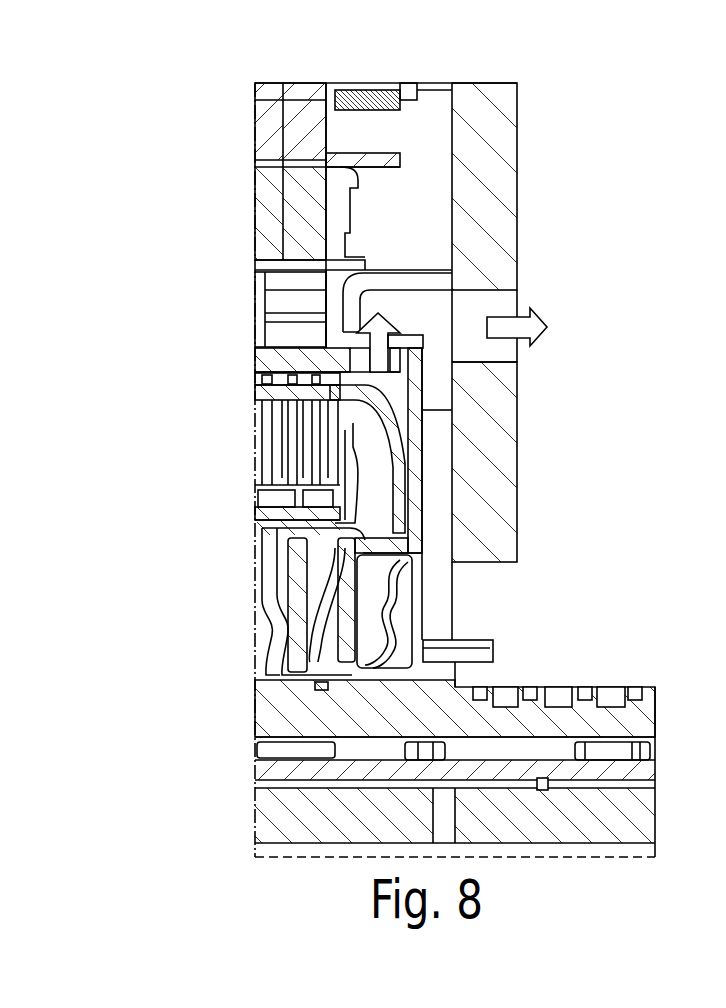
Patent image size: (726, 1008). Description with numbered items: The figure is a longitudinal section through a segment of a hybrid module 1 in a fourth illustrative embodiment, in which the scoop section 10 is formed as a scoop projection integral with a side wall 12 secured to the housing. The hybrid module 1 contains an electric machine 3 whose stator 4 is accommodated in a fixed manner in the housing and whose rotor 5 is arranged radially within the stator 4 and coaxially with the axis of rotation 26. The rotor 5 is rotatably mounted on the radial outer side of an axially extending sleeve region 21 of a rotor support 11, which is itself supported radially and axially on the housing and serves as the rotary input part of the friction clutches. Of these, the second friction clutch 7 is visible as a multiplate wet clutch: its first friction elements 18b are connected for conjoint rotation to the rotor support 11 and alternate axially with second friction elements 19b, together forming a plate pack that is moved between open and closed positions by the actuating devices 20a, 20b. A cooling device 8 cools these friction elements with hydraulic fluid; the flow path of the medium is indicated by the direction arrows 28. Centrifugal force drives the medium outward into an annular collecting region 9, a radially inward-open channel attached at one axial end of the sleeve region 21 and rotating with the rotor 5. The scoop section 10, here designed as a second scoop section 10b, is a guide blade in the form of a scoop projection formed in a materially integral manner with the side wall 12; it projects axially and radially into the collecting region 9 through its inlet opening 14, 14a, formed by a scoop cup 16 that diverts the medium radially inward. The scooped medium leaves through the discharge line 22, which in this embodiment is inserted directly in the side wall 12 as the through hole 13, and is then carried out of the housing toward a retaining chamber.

The hybrid module 1 is at (513, 72).
The electric machine 3 is at (313, 136).
The stator 4 is at (265, 218).
The rotor 5 is at (264, 323).
The second friction clutch 7 is at (245, 468).
The cooling device 8 is at (413, 262).
The collecting region 9 is at (400, 318).
The scoop section 10 is at (487, 281).
The second scoop section 10b is at (474, 281).
The rotor support 11 is at (262, 343).
The sleeve region 21 is at (258, 360).
The side wall 12 is at (500, 127).
The through hole 13 is at (518, 360).
The inlet opening 14 is at (389, 215).
The first inlet opening 14a is at (378, 312).
The scoop cup 16 is at (426, 300).
The first friction elements of the second friction clutch 18b is at (284, 432).
The second friction elements of the second friction clutch 19b is at (284, 462).
The actuating device 20a is at (413, 607).
The actuating device 20b is at (255, 635).
The discharge line 22 is at (488, 338).
The axis of rotation 26 is at (603, 858).
The direction arrows 28 is at (498, 420).